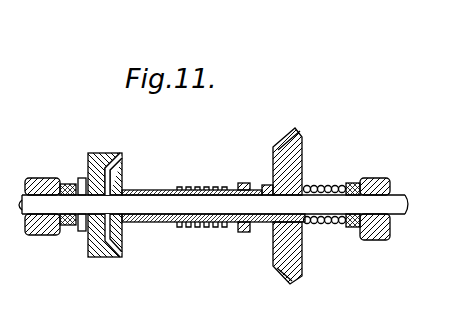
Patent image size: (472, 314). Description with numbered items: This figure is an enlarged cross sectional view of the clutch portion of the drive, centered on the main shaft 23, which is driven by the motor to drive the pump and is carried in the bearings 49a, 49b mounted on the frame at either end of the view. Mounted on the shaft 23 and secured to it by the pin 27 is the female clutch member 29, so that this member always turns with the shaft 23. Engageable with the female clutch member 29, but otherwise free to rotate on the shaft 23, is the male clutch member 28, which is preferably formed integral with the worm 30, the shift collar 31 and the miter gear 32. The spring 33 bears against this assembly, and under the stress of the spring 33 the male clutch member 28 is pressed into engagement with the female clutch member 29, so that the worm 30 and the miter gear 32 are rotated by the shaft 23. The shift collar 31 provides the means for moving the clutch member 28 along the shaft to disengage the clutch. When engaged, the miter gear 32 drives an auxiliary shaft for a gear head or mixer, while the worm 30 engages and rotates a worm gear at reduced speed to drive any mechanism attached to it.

The shaft 23 is at (350, 224).
The pin 27 is at (84, 178).
The male clutch member 28 is at (118, 168).
The female clutch member 29 is at (108, 153).
The worm 30 is at (194, 186).
The shift collar 31 is at (243, 183).
The miter gear 32 is at (303, 147).
The spring 33 is at (324, 187).
The bearing 49a is at (47, 178).
The bearing 49b is at (370, 178).